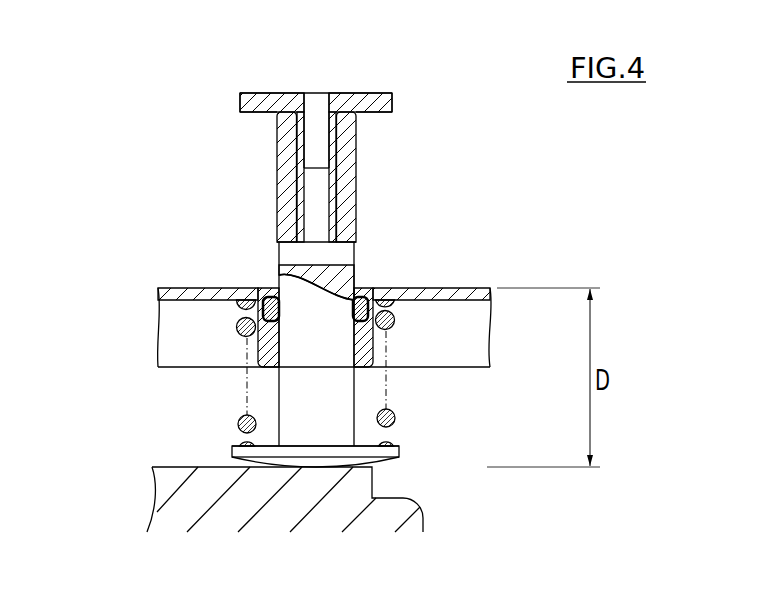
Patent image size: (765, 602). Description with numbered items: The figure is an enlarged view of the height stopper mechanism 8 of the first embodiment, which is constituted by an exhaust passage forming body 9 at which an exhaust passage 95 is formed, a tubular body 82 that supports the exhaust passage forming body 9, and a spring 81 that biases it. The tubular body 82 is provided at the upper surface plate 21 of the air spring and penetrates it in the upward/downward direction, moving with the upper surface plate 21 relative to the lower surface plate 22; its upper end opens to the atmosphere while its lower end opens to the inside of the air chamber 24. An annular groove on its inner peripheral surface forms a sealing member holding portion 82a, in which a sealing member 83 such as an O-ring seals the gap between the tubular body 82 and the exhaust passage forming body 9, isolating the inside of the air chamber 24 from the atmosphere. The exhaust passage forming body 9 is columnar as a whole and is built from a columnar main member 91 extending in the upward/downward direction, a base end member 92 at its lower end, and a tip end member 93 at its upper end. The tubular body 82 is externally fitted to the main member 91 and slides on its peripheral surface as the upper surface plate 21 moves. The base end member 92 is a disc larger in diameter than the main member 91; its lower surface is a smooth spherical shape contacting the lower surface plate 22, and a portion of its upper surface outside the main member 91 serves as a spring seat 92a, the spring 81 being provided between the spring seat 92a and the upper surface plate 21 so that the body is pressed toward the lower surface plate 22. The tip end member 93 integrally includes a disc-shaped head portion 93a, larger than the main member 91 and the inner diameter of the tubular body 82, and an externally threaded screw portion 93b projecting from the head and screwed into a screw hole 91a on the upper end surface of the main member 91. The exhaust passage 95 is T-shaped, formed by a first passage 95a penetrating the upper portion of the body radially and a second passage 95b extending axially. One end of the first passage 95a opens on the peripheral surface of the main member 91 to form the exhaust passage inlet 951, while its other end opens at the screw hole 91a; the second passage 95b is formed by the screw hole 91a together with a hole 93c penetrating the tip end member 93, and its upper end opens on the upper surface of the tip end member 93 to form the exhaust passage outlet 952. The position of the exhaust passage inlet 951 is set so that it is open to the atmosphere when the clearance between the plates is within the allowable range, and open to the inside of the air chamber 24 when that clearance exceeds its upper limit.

The height stopper mechanism 8 is at (505, 173).
The exhaust passage forming body 9 is at (397, 88).
The tip end member 93 is at (240, 100).
The head portion 93a is at (250, 92).
The screw portion 93b is at (334, 138).
The hole 93c is at (307, 103).
The exhaust passage 95 is at (298, 235).
The exhaust passage inlet 951 is at (282, 248).
The first passage 95a is at (355, 252).
The second passage 95b is at (331, 100).
The exhaust passage outlet 952 is at (320, 97).
The main member 91 is at (355, 278).
The screw hole 91a is at (303, 137).
The base end member 92 is at (400, 458).
The spring seat 92a is at (238, 428).
The upper surface plate 21 is at (181, 287).
The lower surface plate 22 is at (170, 467).
The air chamber 24 is at (460, 414).
The spring 81 is at (400, 418).
The tubular body 82 is at (380, 334).
The sealing member holding portion 82a is at (272, 297).
The sealing member 83 is at (238, 314).